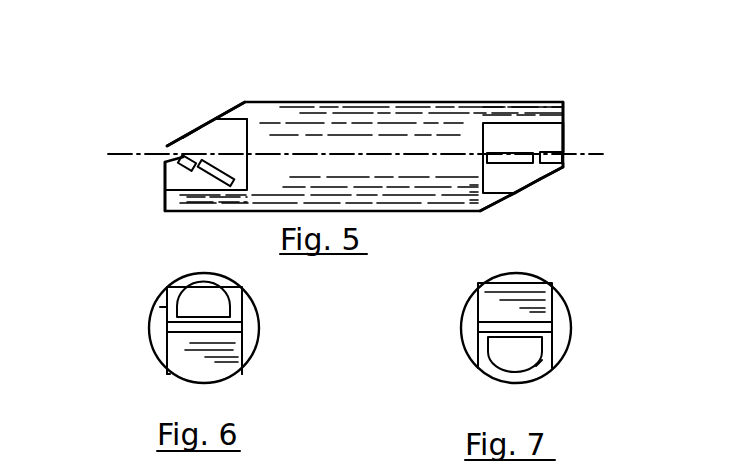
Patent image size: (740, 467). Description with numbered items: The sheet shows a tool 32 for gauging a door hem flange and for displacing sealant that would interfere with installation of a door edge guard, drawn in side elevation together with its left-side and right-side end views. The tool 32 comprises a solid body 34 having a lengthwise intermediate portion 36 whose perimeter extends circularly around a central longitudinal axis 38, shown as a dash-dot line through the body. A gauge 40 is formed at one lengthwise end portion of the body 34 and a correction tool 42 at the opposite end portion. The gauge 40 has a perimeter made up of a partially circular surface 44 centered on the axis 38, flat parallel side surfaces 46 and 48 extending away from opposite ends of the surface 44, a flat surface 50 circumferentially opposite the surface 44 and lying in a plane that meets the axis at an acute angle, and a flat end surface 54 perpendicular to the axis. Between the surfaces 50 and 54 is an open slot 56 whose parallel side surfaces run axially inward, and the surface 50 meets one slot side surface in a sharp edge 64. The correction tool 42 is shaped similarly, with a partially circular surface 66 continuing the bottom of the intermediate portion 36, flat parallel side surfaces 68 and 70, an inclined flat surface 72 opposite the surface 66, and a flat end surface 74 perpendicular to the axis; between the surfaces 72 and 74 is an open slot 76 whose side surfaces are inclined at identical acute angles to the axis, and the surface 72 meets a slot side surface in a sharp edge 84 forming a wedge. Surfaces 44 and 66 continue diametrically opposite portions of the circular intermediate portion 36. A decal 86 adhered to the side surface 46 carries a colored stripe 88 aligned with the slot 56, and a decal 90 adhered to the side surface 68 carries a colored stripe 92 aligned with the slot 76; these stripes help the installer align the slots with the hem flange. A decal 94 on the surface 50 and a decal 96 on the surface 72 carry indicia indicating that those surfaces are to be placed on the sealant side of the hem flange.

In FIG. 5, the tool 32 is at (427, 88).
In FIG. 5, the solid body 34 is at (564, 125).
In FIG. 5, the lengthwise intermediate portion 36 is at (373, 143).
In FIG. 5, the central longitudinal axis 38 is at (308, 155).
In FIG. 5, the gauge 40 is at (622, 143).
In FIG. 7, the gauge 40 is at (593, 365).
In FIG. 5, the correction tool 42 is at (163, 132).
In FIG. 6, the correction tool 42 is at (138, 357).
In FIG. 5, the partially circular surface 44 is at (514, 117).
In FIG. 7, the partially circular surface 44 is at (530, 293).
In FIG. 5, the flat parallel side surface 46 is at (512, 183).
In FIG. 7, the flat parallel side surface 46 is at (478, 318).
In FIG. 7, the flat parallel side surface 48 is at (552, 347).
In FIG. 5, the flat surface 50 is at (540, 180).
In FIG. 7, the flat surface 50 is at (542, 367).
In FIG. 5, the flat end surface 54 is at (566, 134).
In FIG. 7, the flat end surface 54 is at (550, 285).
In FIG. 5, the open slot 56 is at (552, 157).
In FIG. 7, the open slot 56 is at (542, 328).
In FIG. 5, the sharp edge 64 is at (560, 166).
In FIG. 7, the sharp edge 64 is at (492, 328).
In FIG. 5, the partially circular surface 66 is at (167, 191).
In FIG. 6, the partially circular surface 66 is at (230, 378).
In FIG. 5, the flat parallel side surface 68 is at (213, 134).
In FIG. 6, the flat parallel side surface 68 is at (243, 355).
In FIG. 6, the flat parallel side surface 70 is at (160, 307).
In FIG. 5, the flat surface 72 is at (217, 120).
In FIG. 6, the flat surface 72 is at (177, 288).
In FIG. 5, the flat end surface 74 is at (165, 175).
In FIG. 6, the flat end surface 74 is at (188, 362).
In FIG. 5, the open slot 76 is at (188, 156).
In FIG. 6, the open slot 76 is at (175, 325).
In FIG. 5, the sharp edge 84 is at (183, 156).
In FIG. 6, the sharp edge 84 is at (240, 330).
In FIG. 5, the decal 86 is at (528, 173).
In FIG. 7, the decal 86 is at (478, 305).
In FIG. 5, the colored stripe 88 is at (516, 157).
In FIG. 5, the decal 90 is at (192, 182).
In FIG. 6, the decal 90 is at (243, 345).
In FIG. 5, the colored stripe 92 is at (217, 183).
In FIG. 7, the decal 94 is at (520, 358).
In FIG. 6, the decal 96 is at (207, 300).